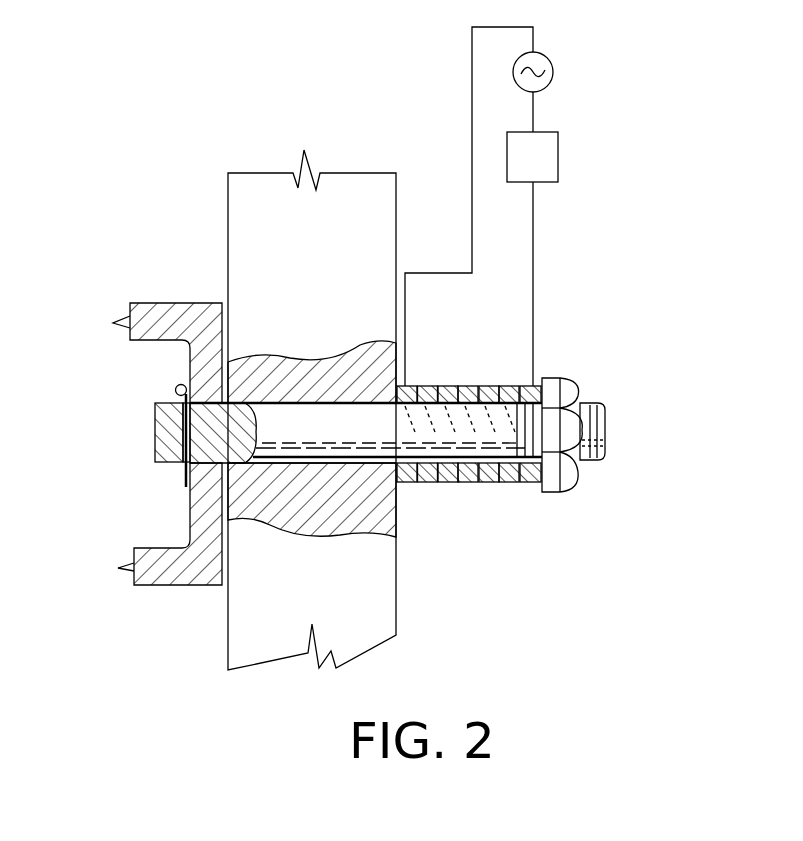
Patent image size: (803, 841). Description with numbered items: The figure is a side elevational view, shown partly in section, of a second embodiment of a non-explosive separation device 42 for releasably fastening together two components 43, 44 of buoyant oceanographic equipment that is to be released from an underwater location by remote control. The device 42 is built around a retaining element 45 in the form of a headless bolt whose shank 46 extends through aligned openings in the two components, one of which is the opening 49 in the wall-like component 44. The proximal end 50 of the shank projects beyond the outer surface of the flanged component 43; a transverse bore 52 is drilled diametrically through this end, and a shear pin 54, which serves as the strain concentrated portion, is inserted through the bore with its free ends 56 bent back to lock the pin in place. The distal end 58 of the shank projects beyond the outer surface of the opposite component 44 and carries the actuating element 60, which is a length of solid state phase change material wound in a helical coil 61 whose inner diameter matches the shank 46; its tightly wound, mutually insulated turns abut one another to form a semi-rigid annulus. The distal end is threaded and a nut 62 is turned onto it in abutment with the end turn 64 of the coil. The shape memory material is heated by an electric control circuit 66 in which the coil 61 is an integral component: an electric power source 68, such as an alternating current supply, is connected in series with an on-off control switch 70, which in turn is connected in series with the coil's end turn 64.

The non-explosive separation device 42 is at (575, 371).
The component 43 is at (192, 585).
The component 44 is at (377, 578).
The retaining element 45 is at (607, 434).
The shank 46 is at (383, 468).
The opening 49 is at (285, 415).
The proximal end 50 is at (153, 457).
The transverse bore 52 is at (160, 420).
The shear pin 54 is at (173, 387).
The free ends 56 is at (172, 472).
The distal end 58 is at (597, 405).
The actuating element 60 is at (488, 488).
The helical coil 61 is at (428, 386).
The nut 62 is at (573, 478).
The end turn 64 is at (532, 384).
The electric control circuit 66 is at (544, 229).
The electric power source 68 is at (553, 70).
The on-off control switch 70 is at (558, 155).